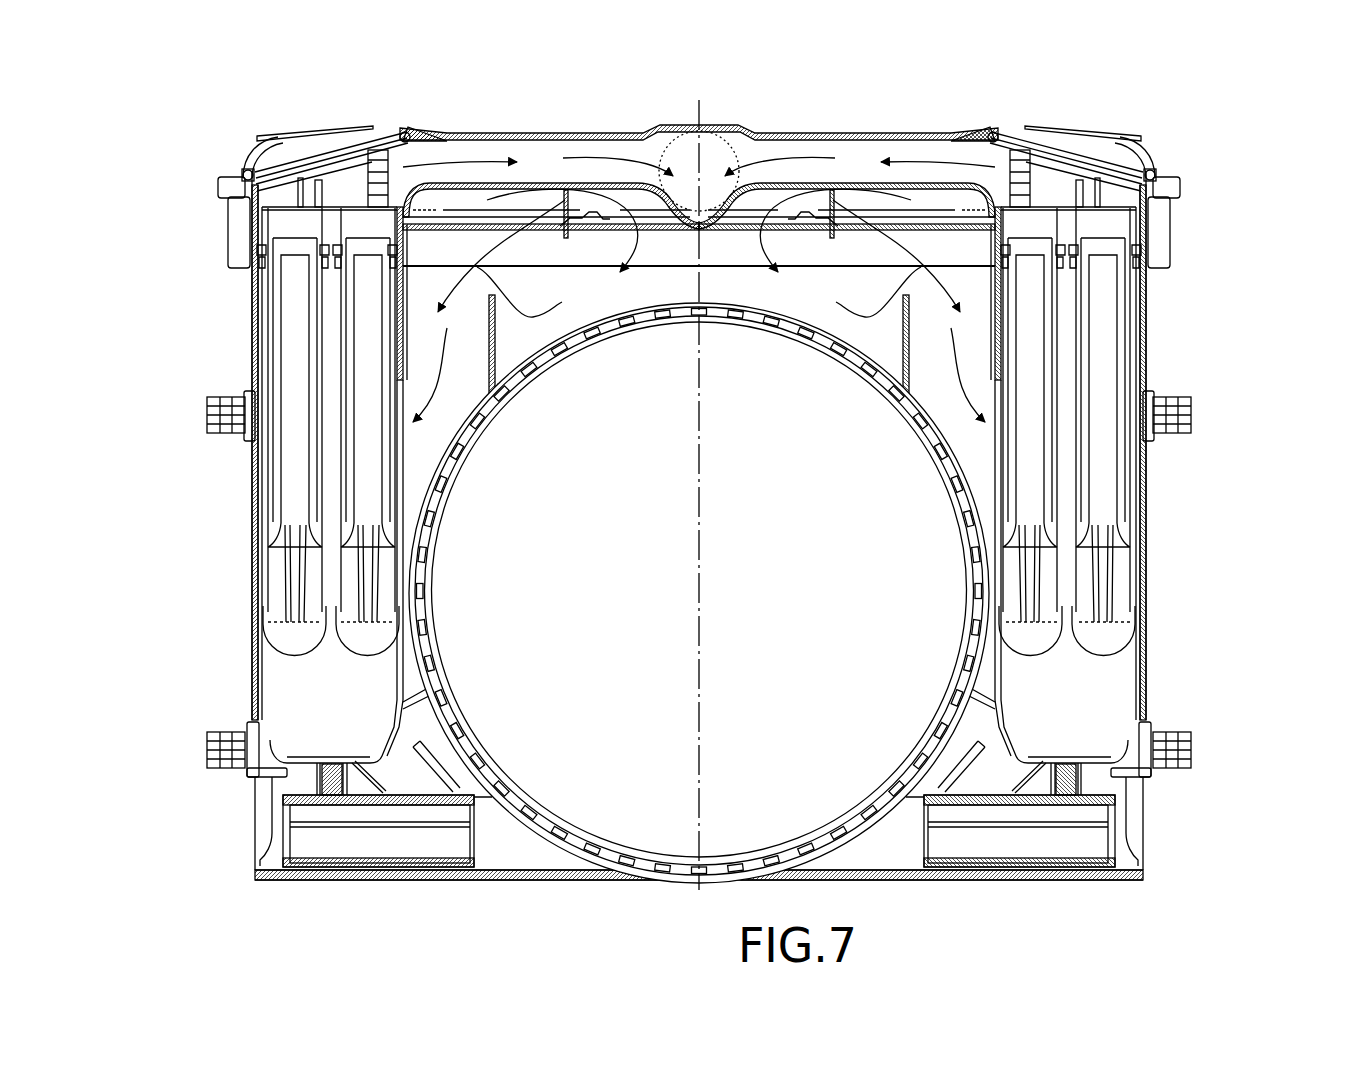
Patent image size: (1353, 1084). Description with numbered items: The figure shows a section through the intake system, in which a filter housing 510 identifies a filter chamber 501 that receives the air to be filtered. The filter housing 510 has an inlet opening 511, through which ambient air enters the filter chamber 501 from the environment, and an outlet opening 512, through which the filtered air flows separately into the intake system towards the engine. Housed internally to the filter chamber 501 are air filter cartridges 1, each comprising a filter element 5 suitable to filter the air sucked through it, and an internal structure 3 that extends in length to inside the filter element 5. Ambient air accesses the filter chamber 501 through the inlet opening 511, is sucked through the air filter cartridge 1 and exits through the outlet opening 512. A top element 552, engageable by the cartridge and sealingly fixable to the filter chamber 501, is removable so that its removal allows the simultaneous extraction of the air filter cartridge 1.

The air filter cartridge 1 is at (334, 593).
The internal structure 3 is at (293, 343).
The filter element 5 is at (342, 497).
The filter chamber 501 is at (323, 718).
The filter housing 510 is at (1155, 568).
The inlet opening 511 is at (410, 403).
The outlet opening 512 is at (356, 166).
The top element 552 is at (316, 125).